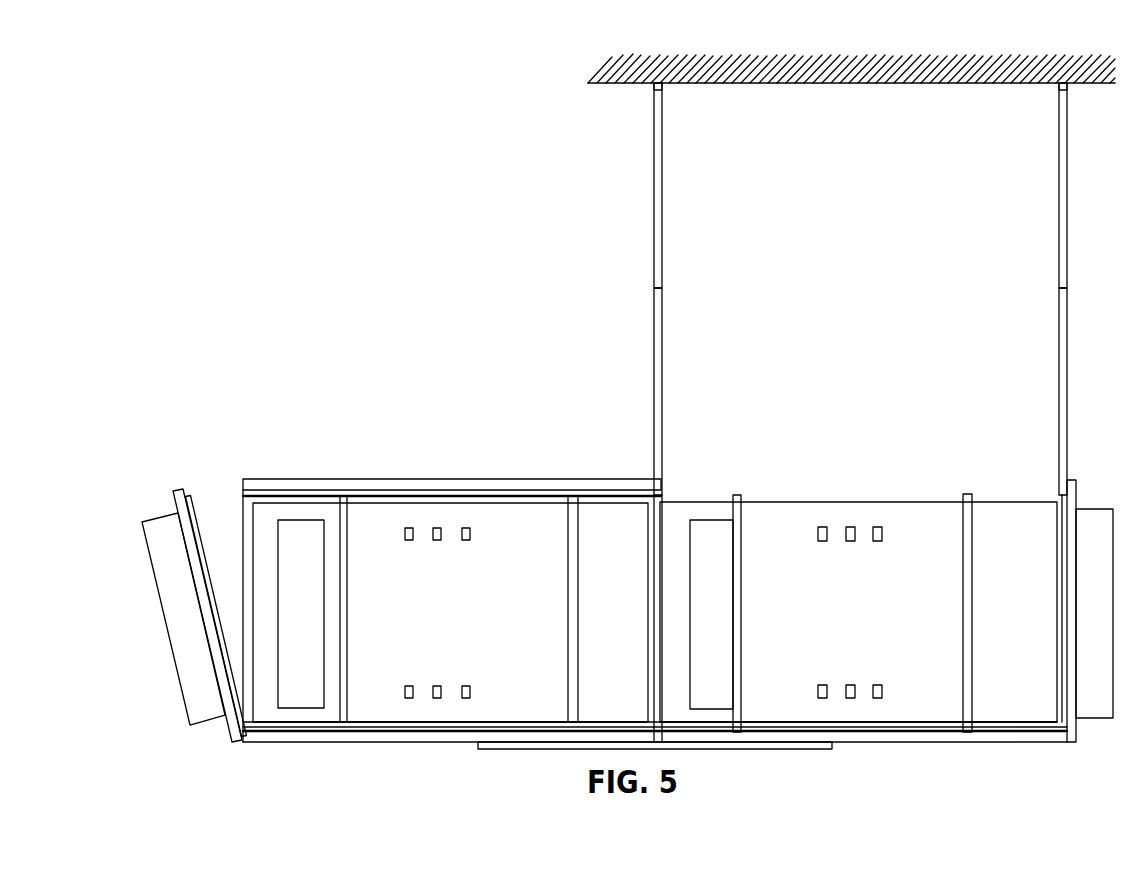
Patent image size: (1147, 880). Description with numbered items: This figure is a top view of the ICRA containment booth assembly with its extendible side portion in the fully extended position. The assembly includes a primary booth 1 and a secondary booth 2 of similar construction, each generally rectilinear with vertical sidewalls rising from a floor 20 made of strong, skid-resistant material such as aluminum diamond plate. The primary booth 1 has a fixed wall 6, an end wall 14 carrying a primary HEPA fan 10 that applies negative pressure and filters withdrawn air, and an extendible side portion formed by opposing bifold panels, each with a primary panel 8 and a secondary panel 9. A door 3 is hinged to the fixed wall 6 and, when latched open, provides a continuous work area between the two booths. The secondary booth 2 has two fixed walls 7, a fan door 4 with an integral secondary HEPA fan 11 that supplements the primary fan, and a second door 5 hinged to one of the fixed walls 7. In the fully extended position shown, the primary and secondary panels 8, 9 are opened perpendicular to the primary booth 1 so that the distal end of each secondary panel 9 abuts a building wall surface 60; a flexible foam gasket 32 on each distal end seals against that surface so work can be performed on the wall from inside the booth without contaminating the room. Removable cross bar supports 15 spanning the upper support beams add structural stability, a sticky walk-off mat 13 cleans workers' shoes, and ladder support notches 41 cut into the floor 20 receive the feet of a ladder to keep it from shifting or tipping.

The primary booth 1 is at (634, 600).
The secondary booth 2 is at (383, 467).
The door 3 is at (762, 748).
The fan door 4 is at (175, 503).
The second door 5 is at (553, 749).
The fixed wall 6 is at (941, 742).
The fixed walls 7 is at (493, 479).
The primary panel 8 is at (654, 400).
The secondary panel 9 is at (654, 210).
The primary HEPA fan 10 is at (1113, 558).
The secondary HEPA fan 11 is at (168, 640).
The sticky walk-off mat 13 is at (305, 640).
The end wall 14 is at (1076, 490).
The cross bar support 15 is at (736, 500).
The floor 20 is at (477, 622).
The gasket 32 is at (654, 91).
The ladder support notches 41 is at (437, 698).
The building wall surface 60 is at (628, 83).